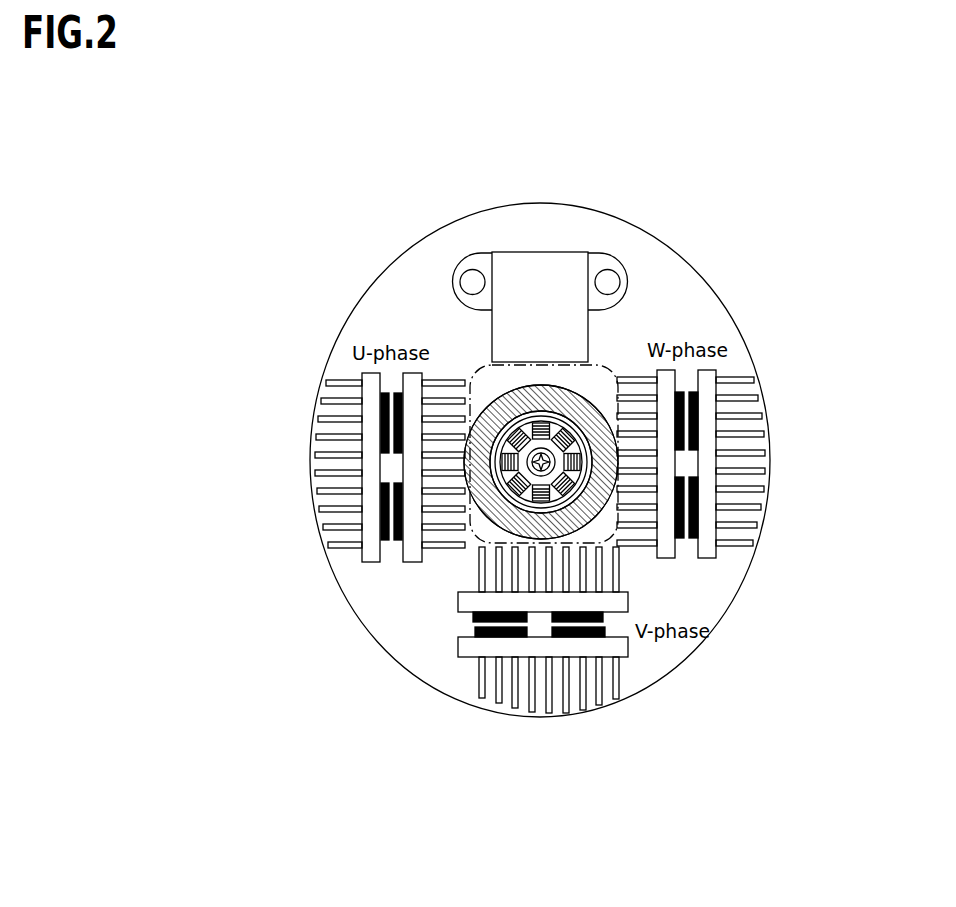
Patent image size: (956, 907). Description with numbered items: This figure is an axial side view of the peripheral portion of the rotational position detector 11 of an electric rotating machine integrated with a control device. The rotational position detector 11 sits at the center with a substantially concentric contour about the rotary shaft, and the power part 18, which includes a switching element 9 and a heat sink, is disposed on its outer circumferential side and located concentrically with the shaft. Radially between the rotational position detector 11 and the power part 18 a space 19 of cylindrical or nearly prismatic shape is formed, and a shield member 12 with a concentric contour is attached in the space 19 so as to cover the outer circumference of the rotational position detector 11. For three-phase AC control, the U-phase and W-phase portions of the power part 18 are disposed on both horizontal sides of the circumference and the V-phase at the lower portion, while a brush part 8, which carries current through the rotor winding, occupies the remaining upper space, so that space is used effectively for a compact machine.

The brush part 8 is at (515, 268).
The switching element 9 is at (389, 540).
The rotational position detector 11 is at (548, 413).
The shield member 12 is at (560, 542).
The power part 18 is at (326, 482).
The space 19 is at (470, 540).